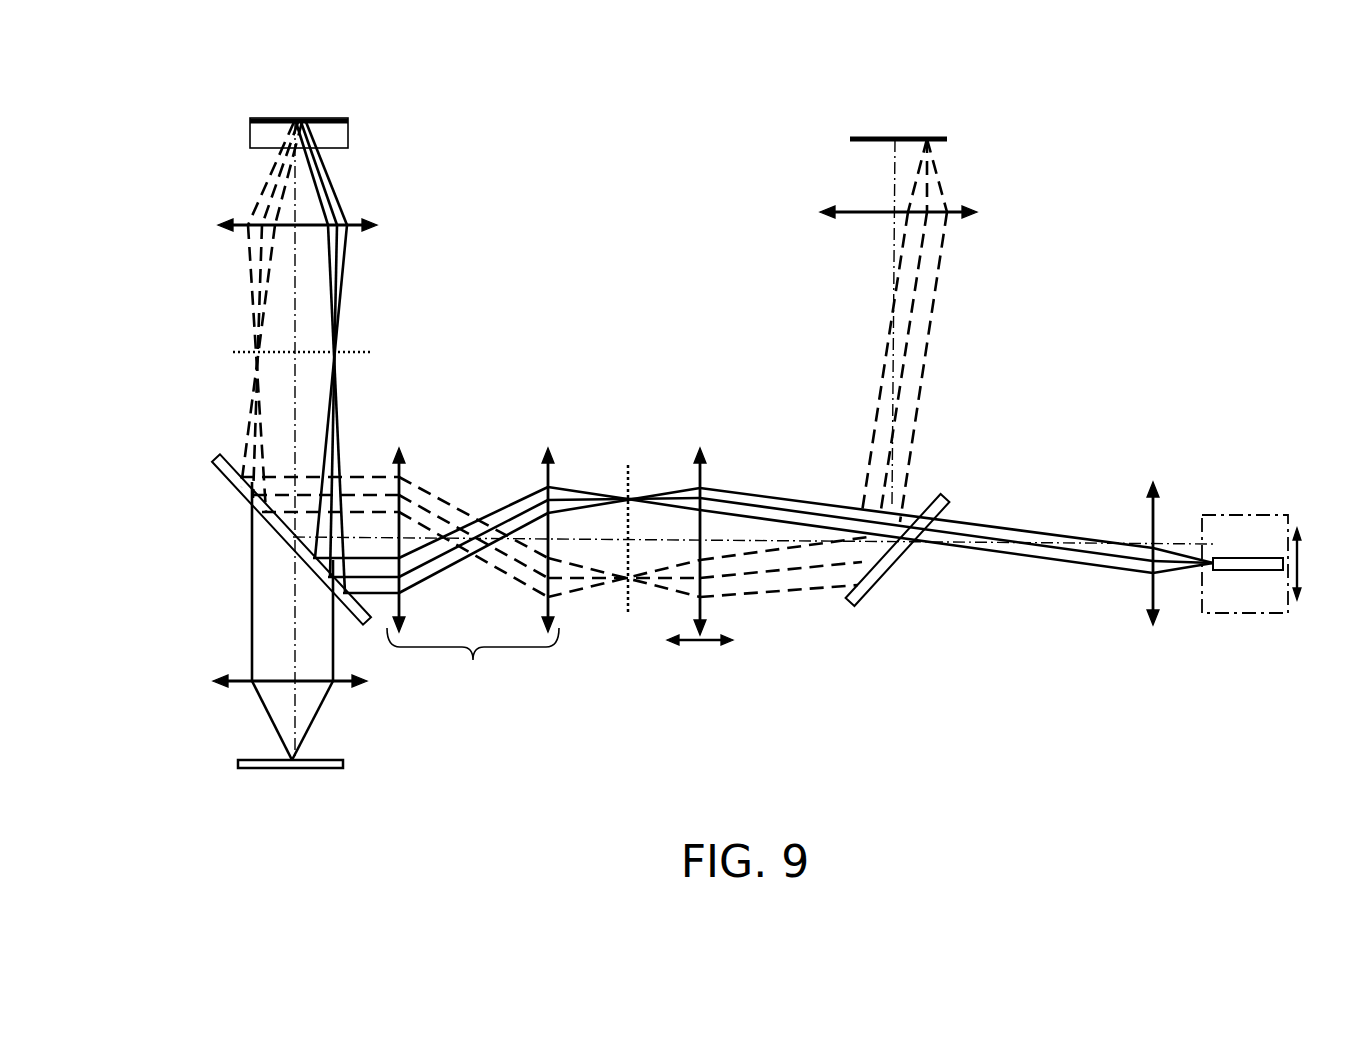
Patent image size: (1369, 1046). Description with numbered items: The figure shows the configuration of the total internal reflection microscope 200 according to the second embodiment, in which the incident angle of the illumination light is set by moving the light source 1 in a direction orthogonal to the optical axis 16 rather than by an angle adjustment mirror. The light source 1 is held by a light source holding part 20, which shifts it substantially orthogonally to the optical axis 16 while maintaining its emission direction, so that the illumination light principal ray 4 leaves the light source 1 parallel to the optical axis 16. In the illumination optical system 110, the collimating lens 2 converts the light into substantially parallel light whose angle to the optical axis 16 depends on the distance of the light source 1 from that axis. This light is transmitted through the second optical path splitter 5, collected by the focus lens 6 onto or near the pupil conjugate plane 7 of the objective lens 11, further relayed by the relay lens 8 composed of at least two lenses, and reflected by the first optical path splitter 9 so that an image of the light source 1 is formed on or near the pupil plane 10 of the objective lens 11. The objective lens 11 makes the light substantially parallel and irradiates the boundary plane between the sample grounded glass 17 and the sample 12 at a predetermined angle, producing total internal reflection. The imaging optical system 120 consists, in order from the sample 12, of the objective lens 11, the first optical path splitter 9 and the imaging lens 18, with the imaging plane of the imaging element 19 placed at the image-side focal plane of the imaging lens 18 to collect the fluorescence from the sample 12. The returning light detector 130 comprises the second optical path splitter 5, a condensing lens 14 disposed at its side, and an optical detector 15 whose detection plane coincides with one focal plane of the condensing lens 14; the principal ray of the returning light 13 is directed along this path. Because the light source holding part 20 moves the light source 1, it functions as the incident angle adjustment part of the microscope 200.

The light source 1 is at (1250, 558).
The collimating lens 2 is at (1153, 480).
The illumination light principal ray 4 is at (766, 515).
The second optical path splitter 5 is at (946, 496).
The focus lens 6 is at (700, 448).
The pupil conjugate plane 7 is at (628, 465).
The relay lens 8 is at (473, 578).
The first optical path splitter 9 is at (258, 520).
The pupil plane 10 is at (373, 352).
The objective lens 11 is at (377, 225).
The sample 12 is at (348, 122).
The principal ray of the returning light 13 is at (250, 262).
The condensing lens 14 is at (820, 210).
The optical detector 15 is at (870, 138).
The optical axis 16 is at (298, 401).
The sample grounded glass 17 is at (250, 136).
The imaging lens 18 is at (368, 687).
The imaging element 19 is at (238, 764).
The light source holding part 20 is at (1253, 613).
The illumination optical system 110 is at (660, 366).
The imaging optical system 120 is at (432, 276).
The returning light detector 130 is at (795, 116).
The total internal reflection microscope 200 is at (997, 115).